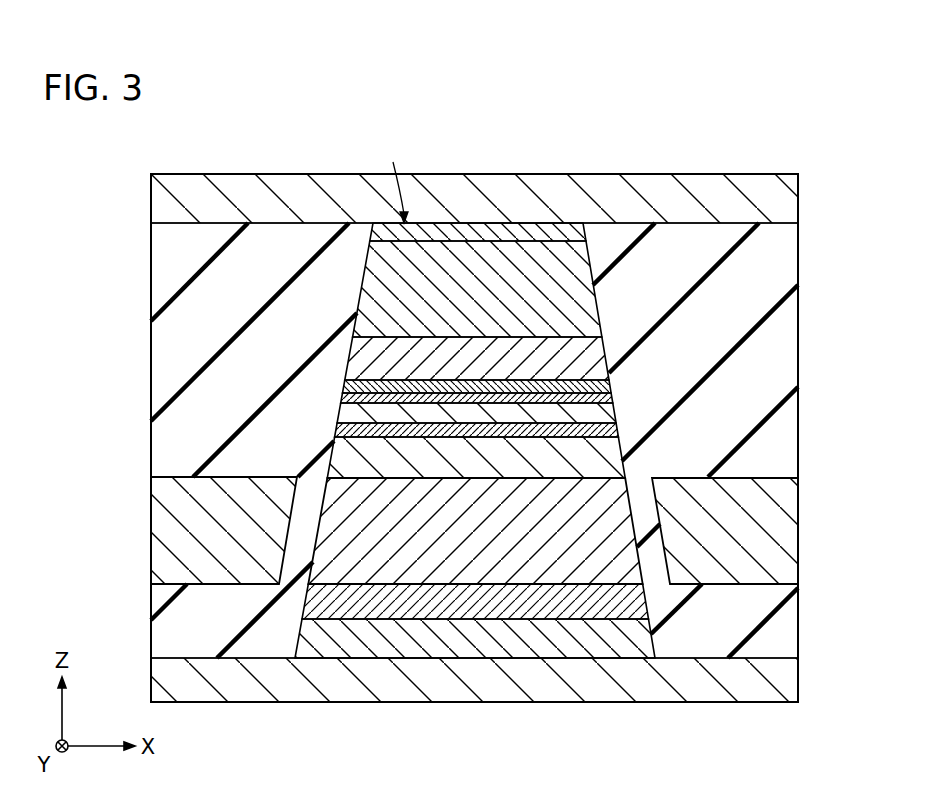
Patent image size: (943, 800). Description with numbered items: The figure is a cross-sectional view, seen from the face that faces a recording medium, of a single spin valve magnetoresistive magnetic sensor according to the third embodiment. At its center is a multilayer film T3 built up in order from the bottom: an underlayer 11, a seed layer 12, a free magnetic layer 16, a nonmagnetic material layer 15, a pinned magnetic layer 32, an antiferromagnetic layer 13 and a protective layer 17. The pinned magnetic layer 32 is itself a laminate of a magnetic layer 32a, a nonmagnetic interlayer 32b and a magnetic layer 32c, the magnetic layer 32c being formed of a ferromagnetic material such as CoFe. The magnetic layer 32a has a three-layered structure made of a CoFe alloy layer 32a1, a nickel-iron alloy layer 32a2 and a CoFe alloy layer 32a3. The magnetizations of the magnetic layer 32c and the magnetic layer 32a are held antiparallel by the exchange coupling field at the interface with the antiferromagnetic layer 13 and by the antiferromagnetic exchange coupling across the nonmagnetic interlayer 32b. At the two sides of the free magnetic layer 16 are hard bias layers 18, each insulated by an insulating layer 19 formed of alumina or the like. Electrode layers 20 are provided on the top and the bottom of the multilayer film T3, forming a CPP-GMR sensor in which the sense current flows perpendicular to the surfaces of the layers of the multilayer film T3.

The underlayer 11 is at (620, 647).
The seed layer 12 is at (547, 603).
The antiferromagnetic layer 13 is at (400, 262).
The nonmagnetic material layer 15 is at (473, 453).
The free magnetic layer 16 is at (380, 555).
The protective layer 17 is at (432, 232).
The hard bias layer 18 is at (170, 532).
The insulating layer 19 is at (172, 369).
The electrode layer 20 is at (793, 199).
The pinned magnetic layer 32 is at (510, 238).
The magnetic layer 32a is at (510, 255).
The CoFe alloy layer 32a1 is at (446, 428).
The NiFe alloy layer 32a2 is at (485, 413).
The CoFe alloy layer 32a3 is at (520, 400).
The nonmagnetic interlayer 32b is at (558, 380).
The magnetic layer 32c is at (577, 360).
The multilayer film T3 is at (394, 179).